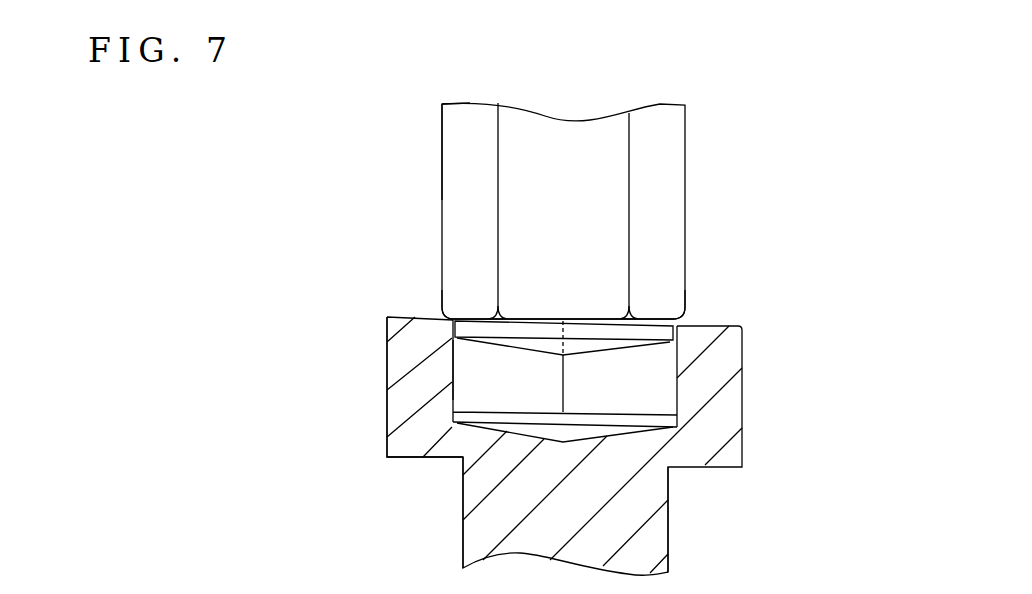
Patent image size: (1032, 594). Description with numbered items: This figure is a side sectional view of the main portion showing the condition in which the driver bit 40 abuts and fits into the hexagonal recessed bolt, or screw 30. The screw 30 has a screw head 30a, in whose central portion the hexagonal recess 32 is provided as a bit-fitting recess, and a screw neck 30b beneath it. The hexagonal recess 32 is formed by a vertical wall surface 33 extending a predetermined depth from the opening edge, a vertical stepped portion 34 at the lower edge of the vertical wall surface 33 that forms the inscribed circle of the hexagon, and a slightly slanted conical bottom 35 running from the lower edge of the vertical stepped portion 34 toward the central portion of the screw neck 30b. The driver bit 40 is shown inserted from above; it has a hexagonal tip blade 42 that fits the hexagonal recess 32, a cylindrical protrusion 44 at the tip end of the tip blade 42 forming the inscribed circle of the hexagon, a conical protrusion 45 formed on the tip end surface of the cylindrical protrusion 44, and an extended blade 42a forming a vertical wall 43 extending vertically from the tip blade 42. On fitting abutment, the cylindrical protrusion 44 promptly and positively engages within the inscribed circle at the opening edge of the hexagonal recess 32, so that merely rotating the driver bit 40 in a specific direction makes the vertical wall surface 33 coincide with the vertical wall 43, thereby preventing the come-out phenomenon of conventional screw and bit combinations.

The hexagonal recessed bolt 30 is at (375, 397).
The screw head 30a is at (405, 437).
The screw neck 30b is at (602, 468).
The hexagonal recess 32 is at (647, 395).
The vertical wall surface 33 is at (470, 361).
The vertical stepped portion 34 is at (457, 416).
The conical bottom 35 is at (546, 430).
The driver bit 40 is at (692, 112).
The tip blade 42 is at (435, 302).
The extended blade 42a is at (438, 112).
The vertical wall 43 is at (668, 169).
The cylindrical protrusion 44 is at (652, 332).
The conical protrusion 45 is at (602, 343).